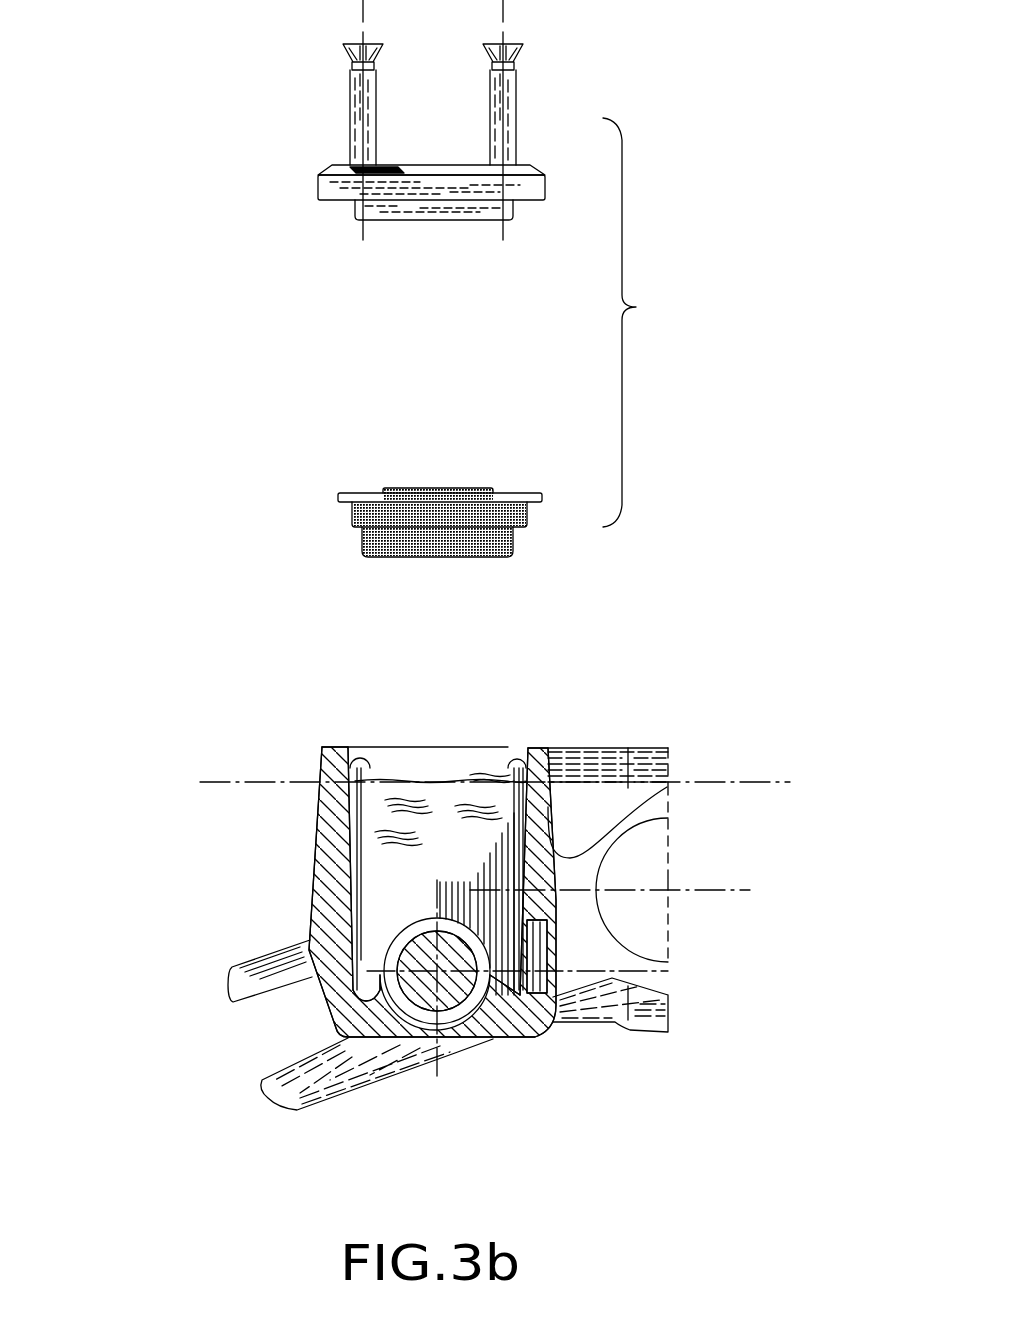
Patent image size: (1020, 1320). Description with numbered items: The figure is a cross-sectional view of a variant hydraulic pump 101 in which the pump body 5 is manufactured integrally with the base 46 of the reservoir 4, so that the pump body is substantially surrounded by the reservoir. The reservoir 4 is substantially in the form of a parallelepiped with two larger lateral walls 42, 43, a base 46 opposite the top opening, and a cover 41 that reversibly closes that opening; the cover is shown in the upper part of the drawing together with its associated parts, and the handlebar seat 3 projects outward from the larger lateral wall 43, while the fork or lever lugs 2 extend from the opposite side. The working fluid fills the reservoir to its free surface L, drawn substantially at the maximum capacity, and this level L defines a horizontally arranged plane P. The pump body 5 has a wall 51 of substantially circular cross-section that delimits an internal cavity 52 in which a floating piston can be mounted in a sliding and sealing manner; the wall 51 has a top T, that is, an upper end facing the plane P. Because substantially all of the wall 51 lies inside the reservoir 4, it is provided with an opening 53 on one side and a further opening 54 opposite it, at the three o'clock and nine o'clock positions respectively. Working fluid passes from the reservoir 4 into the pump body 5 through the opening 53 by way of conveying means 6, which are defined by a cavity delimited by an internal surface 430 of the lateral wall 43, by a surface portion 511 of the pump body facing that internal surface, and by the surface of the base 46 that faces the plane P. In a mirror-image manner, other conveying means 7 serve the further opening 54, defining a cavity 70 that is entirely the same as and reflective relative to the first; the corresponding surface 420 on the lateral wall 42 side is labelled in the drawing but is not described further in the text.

The pump 101 is at (178, 586).
The cover 41 is at (509, 278).
The reservoir 4 is at (622, 721).
The larger lateral wall 42 is at (318, 835).
The larger lateral wall 43 is at (548, 803).
The groove in left wall 420 is at (366, 762).
The internal surface 430 is at (507, 760).
The handlebar seat 3 is at (660, 776).
The conveying means 6 is at (548, 913).
The pump body 5 is at (413, 1022).
The wall 51 is at (473, 1018).
The internal cavity 52 is at (448, 998).
The opening 53 is at (502, 1038).
The surface portion 511 is at (405, 925).
The further opening 54 is at (330, 1003).
The conveying means 7 is at (372, 940).
The cavity 70 is at (306, 942).
The lever lugs 2 is at (234, 986).
The base 46 is at (386, 1078).
The free surface L is at (443, 776).
The plane P is at (220, 782).
The top T is at (498, 938).